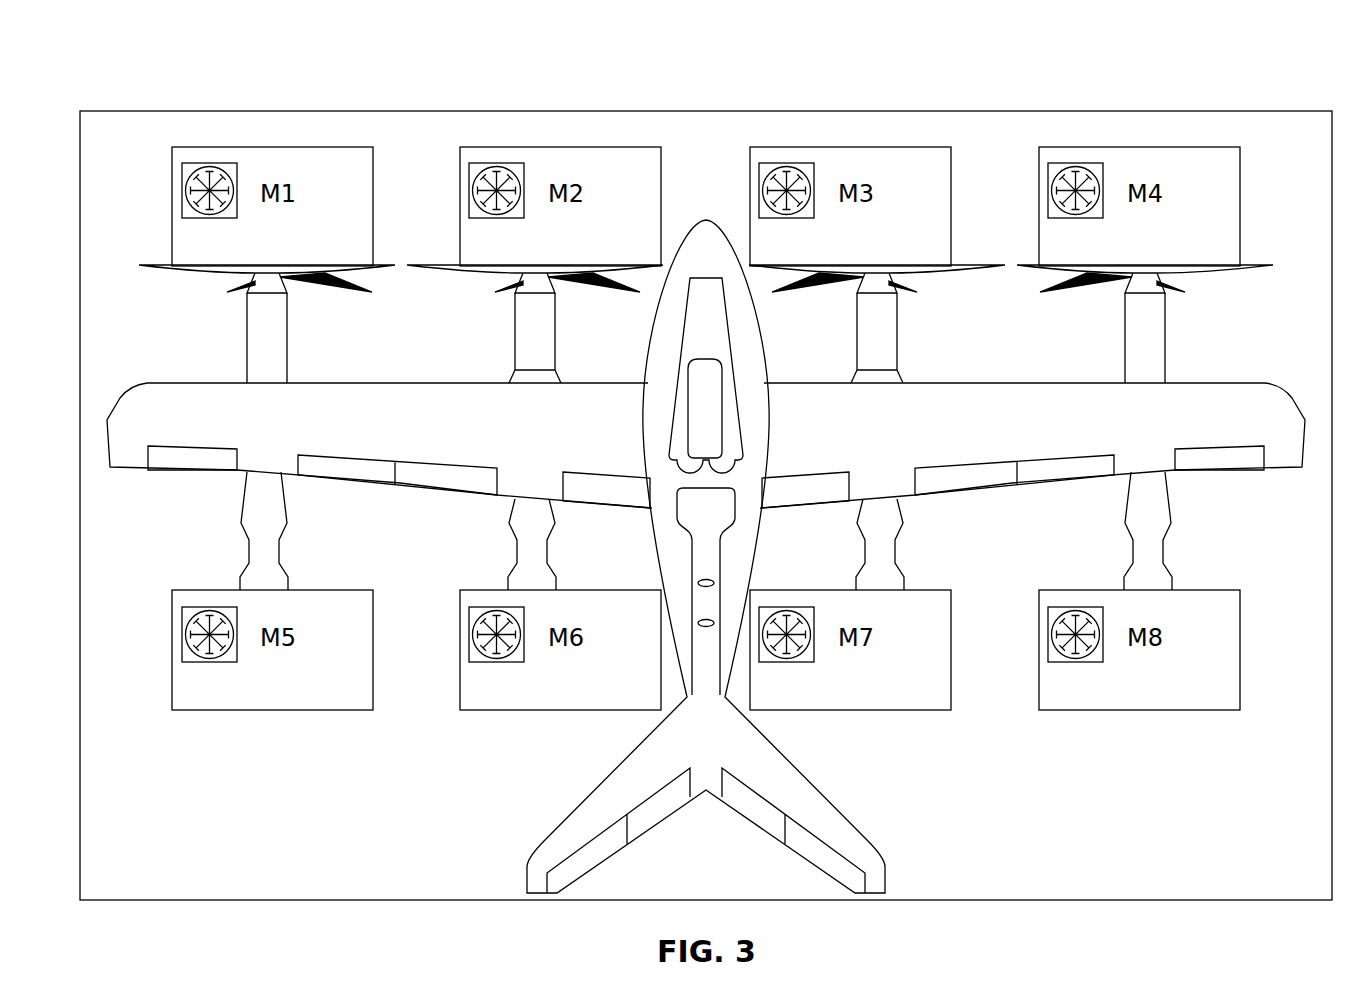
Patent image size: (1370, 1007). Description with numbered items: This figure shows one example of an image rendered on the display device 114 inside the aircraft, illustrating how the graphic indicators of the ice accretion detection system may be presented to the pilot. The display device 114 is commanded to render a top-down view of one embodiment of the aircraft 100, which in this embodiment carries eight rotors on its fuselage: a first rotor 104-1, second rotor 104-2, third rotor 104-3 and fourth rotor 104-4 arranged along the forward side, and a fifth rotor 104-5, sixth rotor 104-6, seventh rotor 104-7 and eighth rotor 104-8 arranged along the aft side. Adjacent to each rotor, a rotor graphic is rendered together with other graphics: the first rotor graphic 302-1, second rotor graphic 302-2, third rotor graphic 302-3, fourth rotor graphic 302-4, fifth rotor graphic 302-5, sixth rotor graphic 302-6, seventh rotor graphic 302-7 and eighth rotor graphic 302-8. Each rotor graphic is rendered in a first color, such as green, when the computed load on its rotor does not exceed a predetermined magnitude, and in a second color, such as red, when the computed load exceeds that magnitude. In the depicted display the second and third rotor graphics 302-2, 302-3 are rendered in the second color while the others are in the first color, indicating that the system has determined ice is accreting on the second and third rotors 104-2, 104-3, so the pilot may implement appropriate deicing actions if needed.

The aircraft 100 is at (712, 197).
The display device 114 is at (1262, 84).
The first rotor 104-1 is at (247, 323).
The second rotor 104-2 is at (515, 323).
The third rotor 104-3 is at (897, 323).
The fourth rotor 104-4 is at (1168, 323).
The fifth rotor 104-5 is at (240, 520).
The sixth rotor 104-6 is at (510, 520).
The seventh rotor 104-7 is at (902, 520).
The eighth rotor 104-8 is at (1173, 520).
The first rotor graphic 302-1 is at (209, 163).
The second rotor graphic 302-2 is at (496, 163).
The third rotor graphic 302-3 is at (786, 163).
The fourth rotor graphic 302-4 is at (1075, 163).
The fifth rotor graphic 302-5 is at (210, 662).
The sixth rotor graphic 302-6 is at (497, 662).
The seventh rotor graphic 302-7 is at (785, 662).
The eighth rotor graphic 302-8 is at (1075, 662).